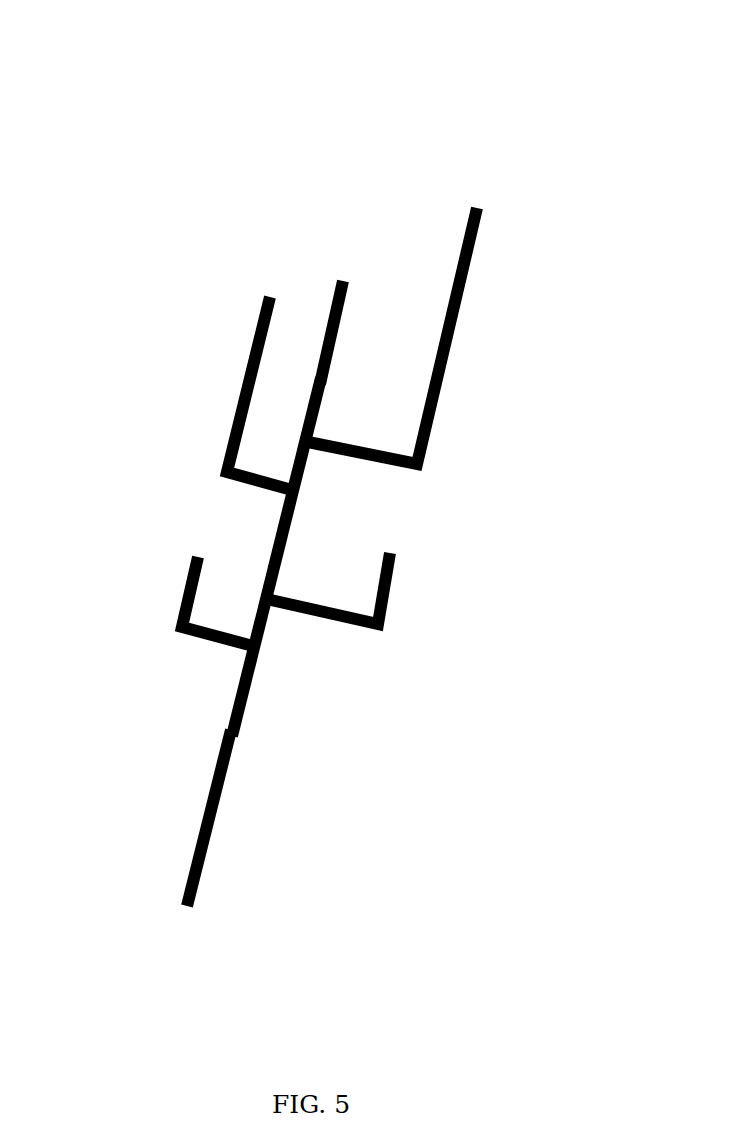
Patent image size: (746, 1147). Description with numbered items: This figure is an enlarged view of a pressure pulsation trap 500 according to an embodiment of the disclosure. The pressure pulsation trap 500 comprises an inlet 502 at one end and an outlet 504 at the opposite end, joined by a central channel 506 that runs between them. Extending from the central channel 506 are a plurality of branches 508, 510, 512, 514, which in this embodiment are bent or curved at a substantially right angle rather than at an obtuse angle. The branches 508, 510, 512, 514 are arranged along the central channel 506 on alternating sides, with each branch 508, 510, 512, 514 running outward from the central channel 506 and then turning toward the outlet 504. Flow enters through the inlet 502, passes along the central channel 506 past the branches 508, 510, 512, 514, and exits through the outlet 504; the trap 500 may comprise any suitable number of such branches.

The pressure pulsation trap 500 is at (90, 74).
The inlet 502 is at (192, 906).
The outlet 504 is at (346, 285).
The central channel 506 is at (242, 712).
The branch 508 is at (188, 588).
The branch 510 is at (392, 592).
The branch 512 is at (247, 363).
The branch 514 is at (469, 262).